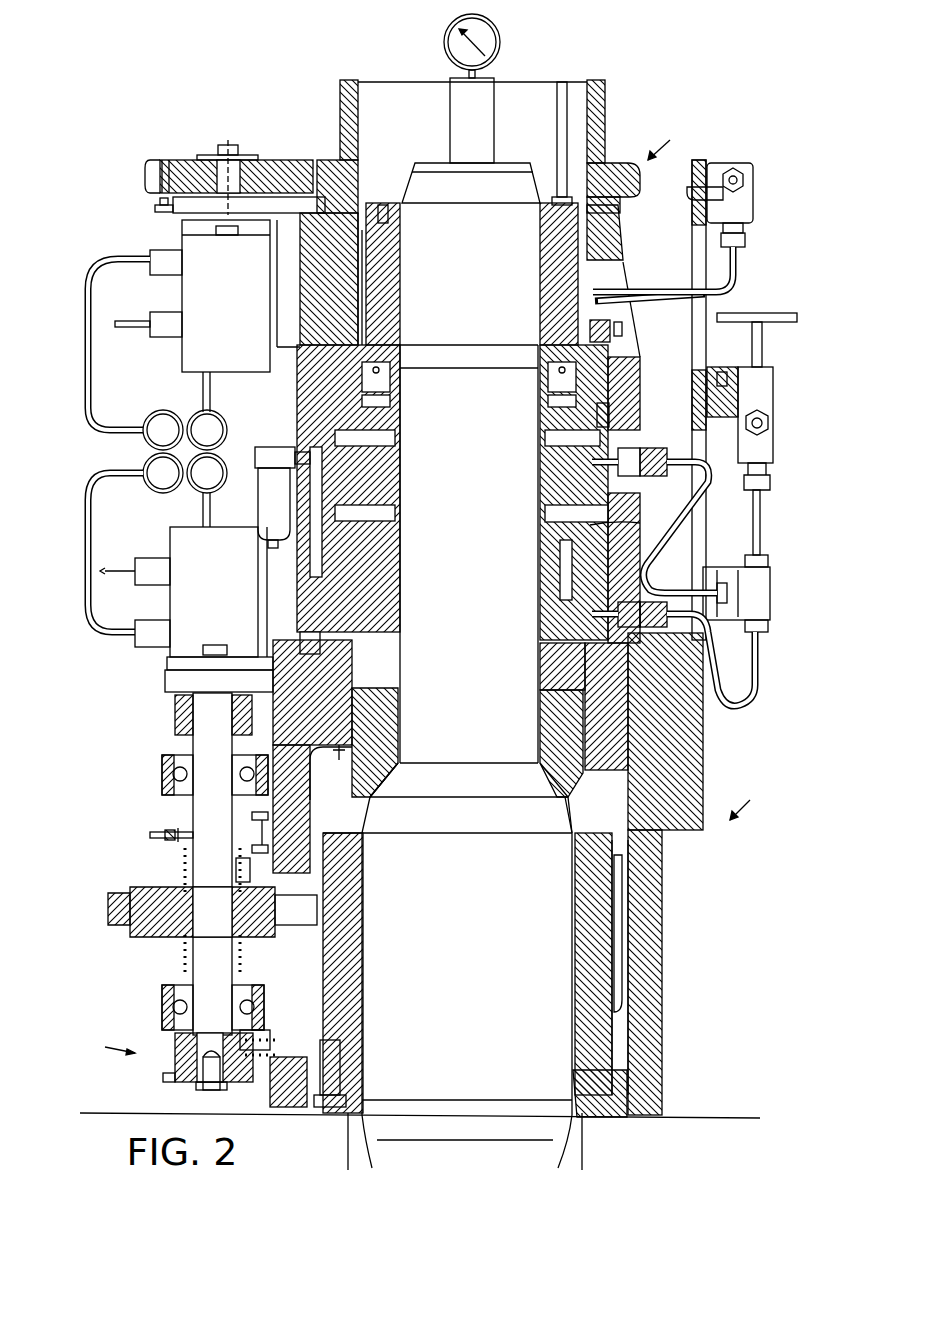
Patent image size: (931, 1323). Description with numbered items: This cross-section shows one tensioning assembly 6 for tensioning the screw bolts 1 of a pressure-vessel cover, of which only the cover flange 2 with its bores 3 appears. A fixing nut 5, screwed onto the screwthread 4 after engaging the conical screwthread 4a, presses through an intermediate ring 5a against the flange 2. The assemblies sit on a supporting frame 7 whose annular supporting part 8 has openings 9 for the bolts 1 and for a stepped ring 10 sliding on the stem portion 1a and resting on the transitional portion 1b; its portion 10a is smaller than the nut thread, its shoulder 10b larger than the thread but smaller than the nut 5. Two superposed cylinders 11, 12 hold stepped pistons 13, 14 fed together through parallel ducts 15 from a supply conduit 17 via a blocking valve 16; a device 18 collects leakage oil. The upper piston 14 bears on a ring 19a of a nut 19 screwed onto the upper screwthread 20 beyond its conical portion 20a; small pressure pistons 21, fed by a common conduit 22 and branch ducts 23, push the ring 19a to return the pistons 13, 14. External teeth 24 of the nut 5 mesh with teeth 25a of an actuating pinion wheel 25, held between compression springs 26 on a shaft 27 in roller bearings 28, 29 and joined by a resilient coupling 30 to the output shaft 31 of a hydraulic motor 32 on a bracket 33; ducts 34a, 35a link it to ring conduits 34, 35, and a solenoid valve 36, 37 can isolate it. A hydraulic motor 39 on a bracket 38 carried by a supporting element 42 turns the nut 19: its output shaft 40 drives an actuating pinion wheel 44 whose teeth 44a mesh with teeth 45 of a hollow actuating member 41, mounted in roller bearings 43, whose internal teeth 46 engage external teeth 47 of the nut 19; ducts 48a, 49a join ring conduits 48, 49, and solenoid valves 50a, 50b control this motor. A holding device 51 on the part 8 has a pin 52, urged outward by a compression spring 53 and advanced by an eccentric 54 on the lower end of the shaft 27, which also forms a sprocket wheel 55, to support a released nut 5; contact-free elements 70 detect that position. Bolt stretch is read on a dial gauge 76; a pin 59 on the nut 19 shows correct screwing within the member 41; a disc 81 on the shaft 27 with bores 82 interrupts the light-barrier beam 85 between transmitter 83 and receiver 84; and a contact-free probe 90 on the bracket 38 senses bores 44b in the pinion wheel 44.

The screw bolt 1 is at (488, 933).
The stem portion 1a is at (480, 588).
The transitional portion 1b is at (560, 783).
The cover flange 2 is at (743, 1118).
The bore 3 is at (583, 1158).
The screwthread 4 is at (590, 912).
The conical screwthread portion 4a is at (572, 815).
The fixing nut 5 is at (598, 960).
The intermediate element 5a is at (610, 1083).
The tensioning assembly 6 is at (664, 136).
The supporting frame 7 is at (747, 796).
The supporting part 8 is at (655, 870).
The opening 9 is at (573, 675).
The stepped ring 10 is at (573, 722).
The ring portion 10a is at (376, 782).
The shoulder portion 10b is at (350, 760).
The cylinder 11 is at (630, 500).
The cylinder 12 is at (625, 385).
The piston 13 is at (632, 521).
The piston 14 is at (610, 415).
The duct 15 is at (709, 498).
The blocking valve 16 is at (762, 398).
The supply conduit 17 is at (766, 430).
The leakage oil collecting device 18 is at (285, 428).
The nut 19 is at (600, 318).
The ring 19a is at (612, 352).
The screwthread 20 is at (600, 270).
The conical screwthread portion 20a is at (538, 190).
The pressure piston 21 is at (385, 385).
The supply conduit 22 is at (745, 178).
The branch duct 23 is at (740, 265).
The external teeth 24 is at (617, 995).
The actuating pinion wheel 25 is at (130, 894).
The complementary teeth 25a is at (113, 917).
The compression spring 26 is at (182, 873).
The shaft 27 is at (190, 810).
The roller bearing 28 is at (160, 1000).
The roller bearing 29 is at (160, 778).
The resilient coupling 30 is at (178, 725).
The output shaft 31 is at (173, 705).
The hydraulic motor 32 is at (216, 605).
The plate 33 is at (167, 692).
The ring conduit 34 is at (148, 488).
The duct 34a is at (92, 542).
The ring conduit 35 is at (226, 490).
The duct 35a is at (203, 512).
The controllable valve 36 is at (150, 647).
The controllable valve 37 is at (150, 585).
The bracket 38 is at (182, 213).
The hydraulic motor 39 is at (232, 325).
The output shaft 40 is at (230, 165).
The actuating member 41 is at (345, 124).
The supporting element 42 is at (300, 352).
The roller bearing 43 is at (362, 235).
The actuating pinion wheel 44 is at (178, 175).
The teeth 44a is at (145, 175).
The bores 44b is at (165, 160).
The complementary teeth 45 is at (641, 180).
The internal teeth 46 is at (350, 95).
The external teeth 47 is at (363, 285).
The ring conduit 48 is at (145, 418).
The feed- and discharge-duct 48a is at (92, 350).
The ring conduit 49 is at (226, 415).
The feed- and discharge-duct 49a is at (202, 390).
The solenoid valve 50a is at (163, 275).
The solenoid valve 50b is at (163, 337).
The holding device 51 is at (107, 1044).
The pin 52 is at (330, 1030).
The compression spring 53 is at (222, 1085).
The eccentric 54 is at (175, 1038).
The sprocket wheel 55 is at (163, 1075).
The pin 59 is at (567, 112).
The detection element 70 is at (345, 750).
The dial gauge 76 is at (501, 40).
The disc 81 is at (150, 832).
The bores 82 is at (174, 840).
The transmitter 83 is at (270, 815).
The receiver 84 is at (254, 867).
The beam 85 is at (270, 850).
The probe 90 is at (155, 205).